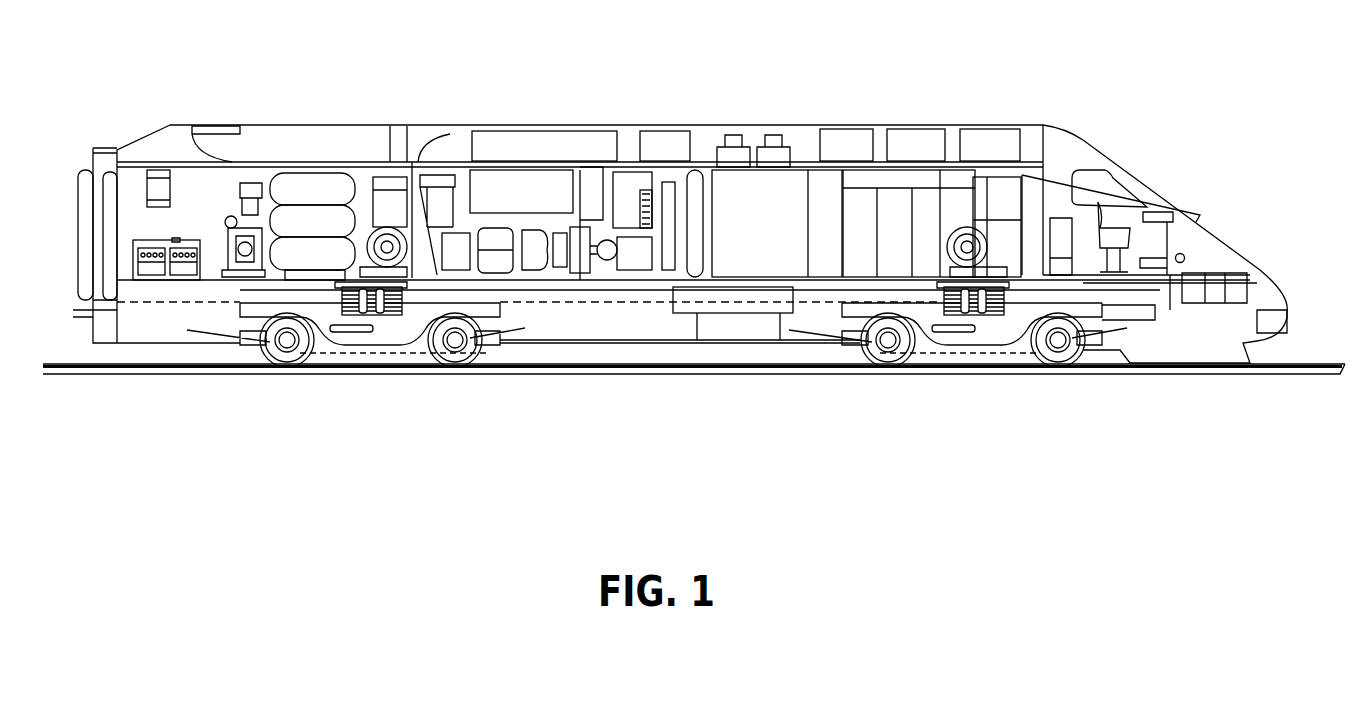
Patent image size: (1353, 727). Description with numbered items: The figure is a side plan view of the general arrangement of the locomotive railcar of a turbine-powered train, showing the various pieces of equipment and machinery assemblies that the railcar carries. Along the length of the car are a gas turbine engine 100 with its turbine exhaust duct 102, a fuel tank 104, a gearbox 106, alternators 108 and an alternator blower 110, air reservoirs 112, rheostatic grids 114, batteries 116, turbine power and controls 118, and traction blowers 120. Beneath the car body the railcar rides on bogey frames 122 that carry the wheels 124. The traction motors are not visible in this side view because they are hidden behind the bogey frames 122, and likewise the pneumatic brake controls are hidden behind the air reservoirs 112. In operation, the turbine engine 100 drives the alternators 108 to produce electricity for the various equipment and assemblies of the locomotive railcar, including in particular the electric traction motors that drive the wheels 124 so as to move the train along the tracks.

The gas turbine engine 100 is at (512, 243).
The turbine exhaust duct 102 is at (437, 190).
The fuel tank 104 is at (688, 327).
The gearbox 106 is at (587, 262).
The alternators 108 is at (643, 262).
The alternator blower 110 is at (643, 182).
The air reservoirs 112 is at (300, 177).
The rheostatic grids 114 is at (915, 147).
The batteries 116 is at (180, 260).
The turbine power and controls 118 is at (390, 193).
The traction blowers 120 is at (383, 248).
The bogey frames 122 is at (395, 340).
The wheels 124 is at (268, 363).